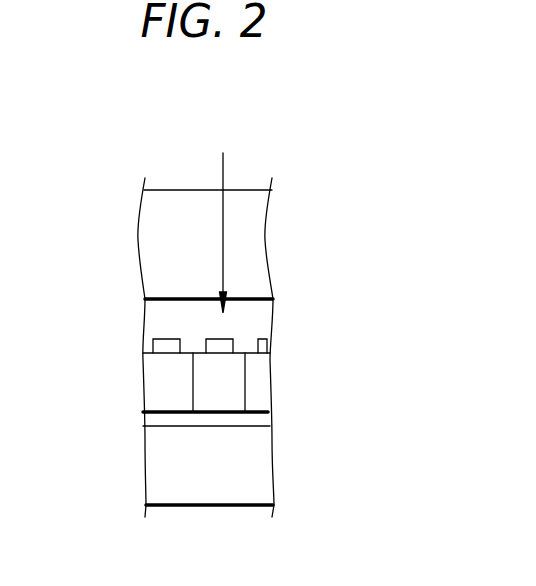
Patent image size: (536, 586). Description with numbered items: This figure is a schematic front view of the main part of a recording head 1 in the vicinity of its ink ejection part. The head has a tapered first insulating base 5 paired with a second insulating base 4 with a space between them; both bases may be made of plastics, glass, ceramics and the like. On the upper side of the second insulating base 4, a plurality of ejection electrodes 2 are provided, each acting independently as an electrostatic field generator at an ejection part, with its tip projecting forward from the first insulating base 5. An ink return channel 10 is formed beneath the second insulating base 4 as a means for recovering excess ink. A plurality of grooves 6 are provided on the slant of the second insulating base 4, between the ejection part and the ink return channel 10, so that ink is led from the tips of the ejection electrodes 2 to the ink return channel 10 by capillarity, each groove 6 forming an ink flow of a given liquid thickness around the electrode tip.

The recording head 1 is at (306, 193).
The ejection electrode 2 is at (232, 340).
The second insulating base 4 is at (172, 393).
The first insulating base 5 is at (245, 264).
The groove 6 is at (237, 390).
The ink return channel 10 is at (255, 420).